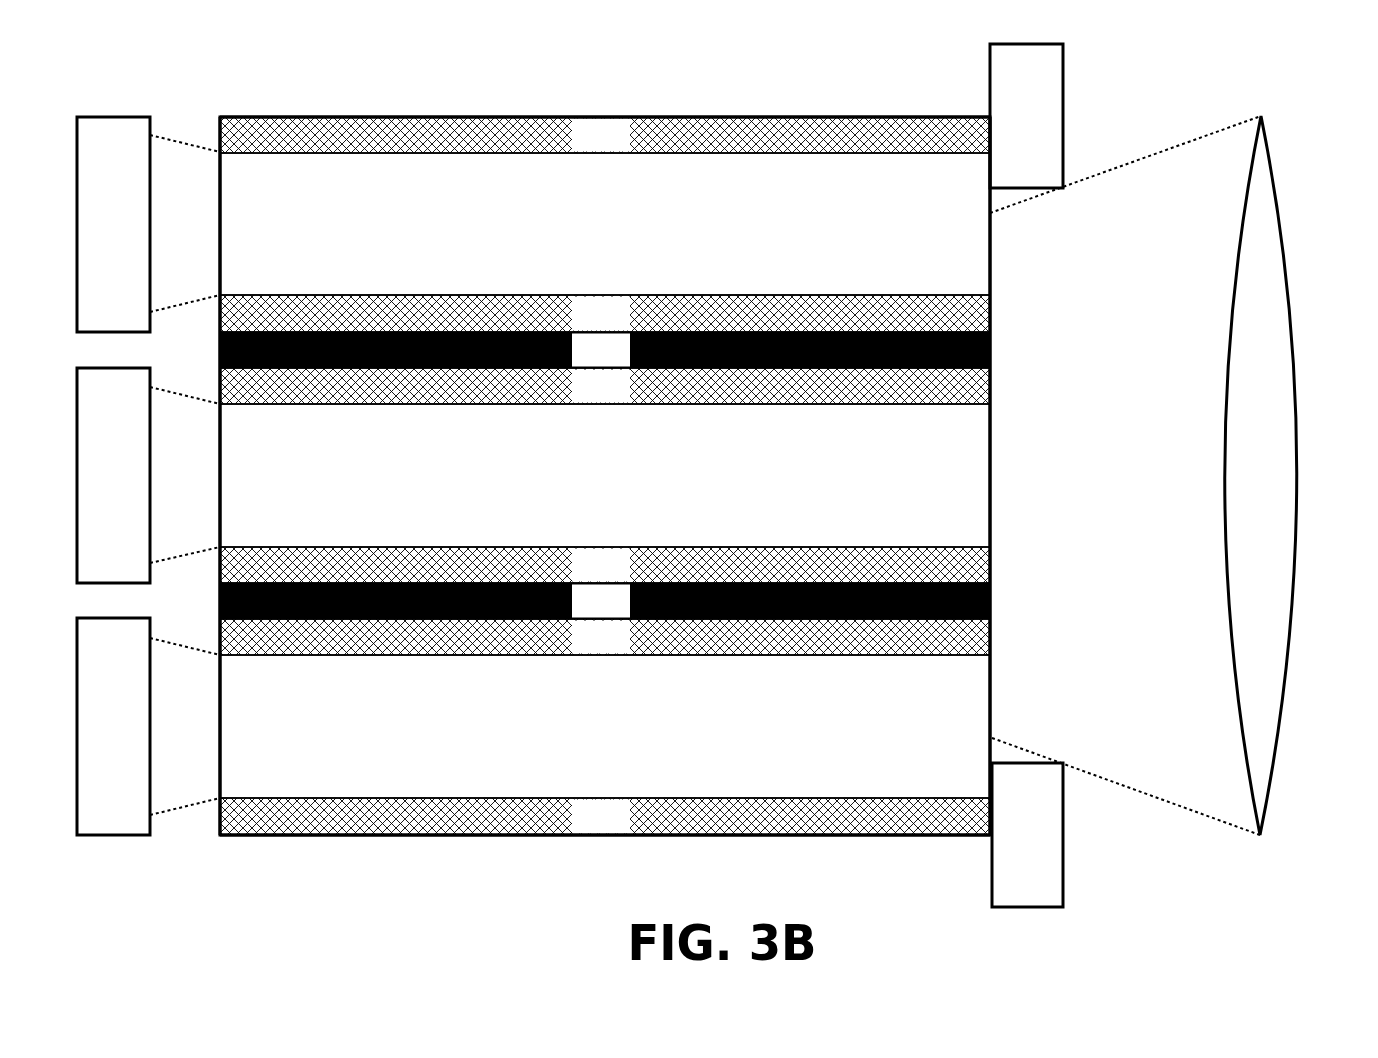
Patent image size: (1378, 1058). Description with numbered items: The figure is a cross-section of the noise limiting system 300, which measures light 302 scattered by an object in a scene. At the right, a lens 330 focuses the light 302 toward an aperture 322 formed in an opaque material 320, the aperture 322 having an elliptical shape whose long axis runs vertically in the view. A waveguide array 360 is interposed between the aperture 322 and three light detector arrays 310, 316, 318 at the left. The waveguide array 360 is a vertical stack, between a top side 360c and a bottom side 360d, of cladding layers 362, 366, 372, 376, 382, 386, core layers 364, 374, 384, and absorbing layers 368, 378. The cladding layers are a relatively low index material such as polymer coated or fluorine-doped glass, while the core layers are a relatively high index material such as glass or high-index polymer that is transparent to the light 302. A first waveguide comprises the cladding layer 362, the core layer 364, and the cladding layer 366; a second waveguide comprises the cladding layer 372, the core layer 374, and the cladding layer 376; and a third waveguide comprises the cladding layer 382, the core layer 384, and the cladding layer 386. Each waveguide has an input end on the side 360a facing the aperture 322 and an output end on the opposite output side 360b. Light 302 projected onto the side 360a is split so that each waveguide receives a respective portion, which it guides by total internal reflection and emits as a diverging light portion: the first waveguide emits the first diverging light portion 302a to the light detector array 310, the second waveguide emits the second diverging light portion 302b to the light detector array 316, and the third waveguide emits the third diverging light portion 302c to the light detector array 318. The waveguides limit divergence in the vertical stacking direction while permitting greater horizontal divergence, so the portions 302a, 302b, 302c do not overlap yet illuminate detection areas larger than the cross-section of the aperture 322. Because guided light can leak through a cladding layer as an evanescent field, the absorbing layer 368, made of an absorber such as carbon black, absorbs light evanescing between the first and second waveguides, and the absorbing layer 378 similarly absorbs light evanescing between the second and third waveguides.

The noise limiting system 300 is at (1329, 136).
The light 302 is at (1105, 783).
The first diverging light portion 302a is at (210, 156).
The second diverging light portion 302b is at (210, 408).
The third diverging light portion 302c is at (210, 659).
The light detector array 310 is at (91, 236).
The light detector array 316 is at (91, 487).
The light detector array 318 is at (91, 737).
The opaque material 320 is at (1005, 83).
The aperture 322 is at (1040, 470).
The lens 330 is at (1238, 479).
The waveguide array 360 is at (842, 842).
The input side 360a is at (992, 350).
The output side 360b is at (219, 118).
The top side 360c is at (637, 117).
The bottom side 360d is at (438, 837).
The cladding layer 362 is at (579, 146).
The core layer 364 is at (579, 235).
The cladding layer 366 is at (579, 324).
The absorbing layer 368 is at (579, 361).
The cladding layer 372 is at (579, 397).
The core layer 374 is at (579, 486).
The cladding layer 376 is at (579, 576).
The absorbing layer 378 is at (579, 612).
The cladding layer 382 is at (579, 648).
The core layer 384 is at (579, 738).
The cladding layer 386 is at (579, 827).